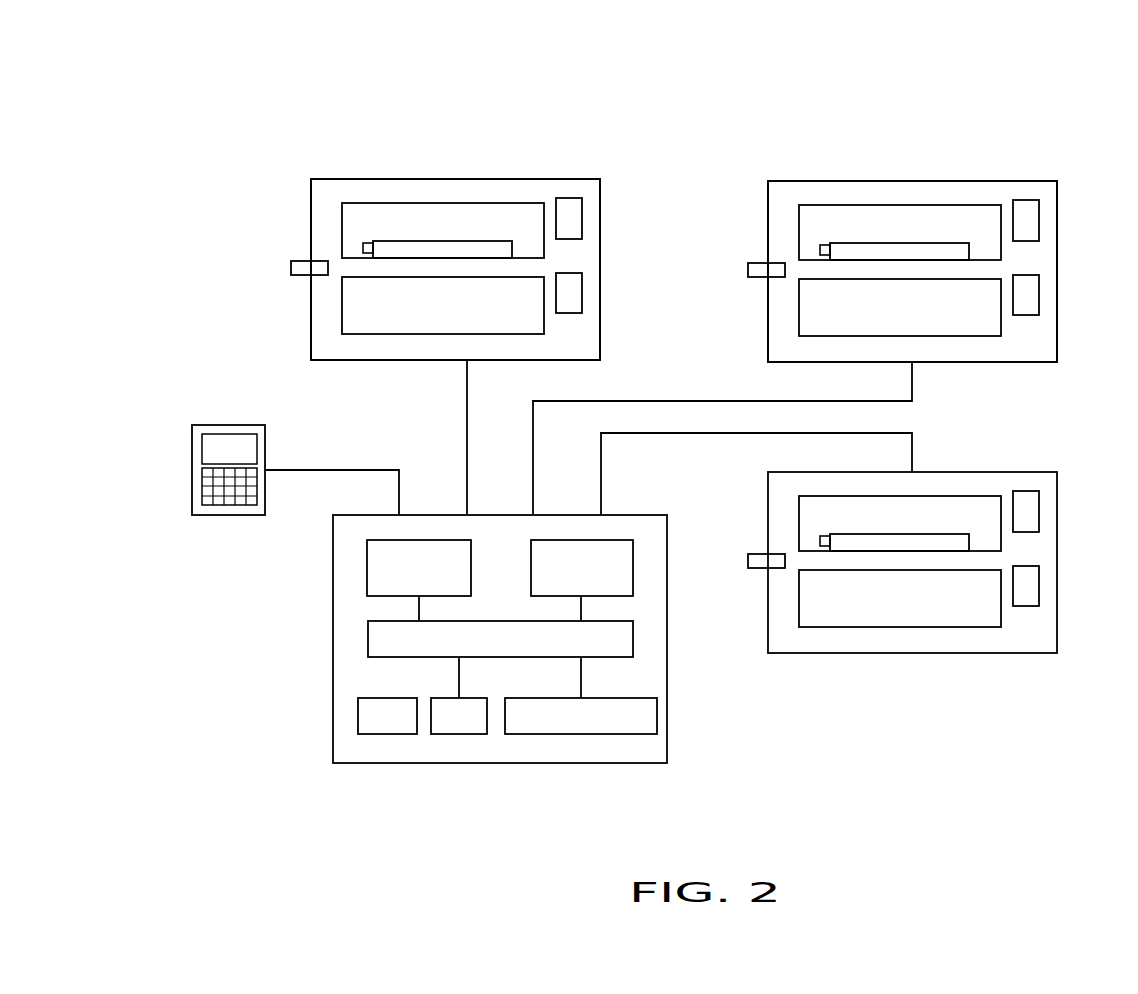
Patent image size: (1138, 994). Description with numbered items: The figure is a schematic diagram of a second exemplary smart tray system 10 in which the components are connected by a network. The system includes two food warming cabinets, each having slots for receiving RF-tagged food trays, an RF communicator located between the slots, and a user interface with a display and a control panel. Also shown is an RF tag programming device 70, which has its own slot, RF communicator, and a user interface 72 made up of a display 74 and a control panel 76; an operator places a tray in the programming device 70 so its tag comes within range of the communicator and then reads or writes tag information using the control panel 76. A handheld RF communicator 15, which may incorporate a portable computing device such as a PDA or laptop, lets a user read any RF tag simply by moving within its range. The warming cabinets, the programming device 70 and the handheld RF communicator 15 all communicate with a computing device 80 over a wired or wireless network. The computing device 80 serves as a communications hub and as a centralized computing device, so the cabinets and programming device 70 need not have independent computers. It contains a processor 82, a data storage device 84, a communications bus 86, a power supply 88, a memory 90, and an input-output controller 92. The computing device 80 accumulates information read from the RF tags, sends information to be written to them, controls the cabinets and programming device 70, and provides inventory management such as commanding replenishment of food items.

The smart tray system 10 is at (300, 88).
The handheld RF communicator 15 is at (237, 425).
The RF tag programming device 70 is at (1010, 472).
The user interface 72 is at (1047, 553).
The display 74 is at (1032, 507).
The control panel 76 is at (1033, 593).
The computing device 80 is at (585, 763).
The processor 82 is at (444, 730).
The data storage device 84 is at (403, 582).
The communications bus 86 is at (485, 653).
The power supply 88 is at (373, 730).
The memory 90 is at (566, 730).
The input-output controller 92 is at (566, 582).